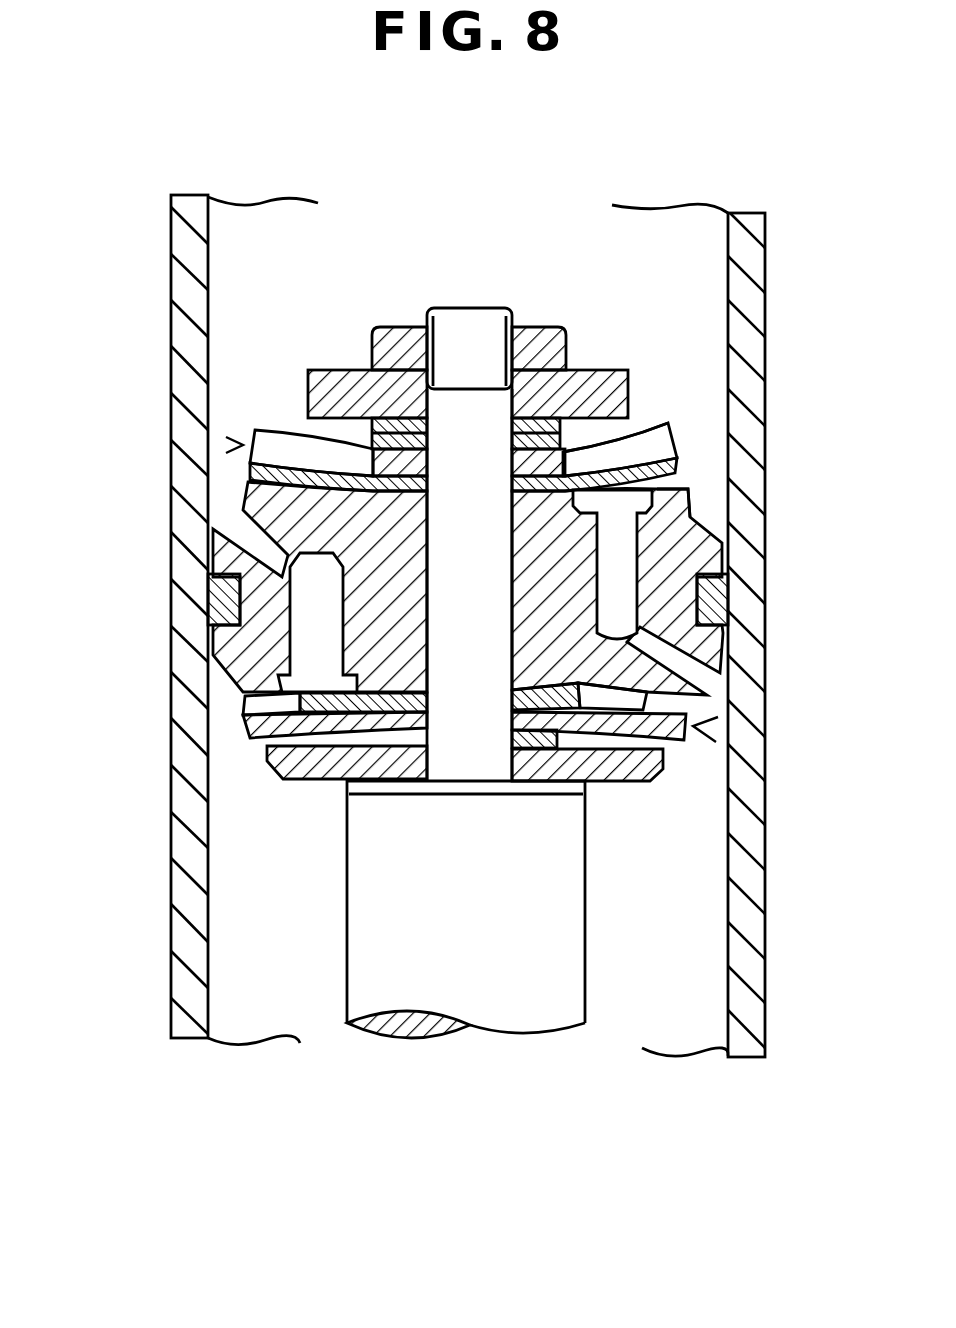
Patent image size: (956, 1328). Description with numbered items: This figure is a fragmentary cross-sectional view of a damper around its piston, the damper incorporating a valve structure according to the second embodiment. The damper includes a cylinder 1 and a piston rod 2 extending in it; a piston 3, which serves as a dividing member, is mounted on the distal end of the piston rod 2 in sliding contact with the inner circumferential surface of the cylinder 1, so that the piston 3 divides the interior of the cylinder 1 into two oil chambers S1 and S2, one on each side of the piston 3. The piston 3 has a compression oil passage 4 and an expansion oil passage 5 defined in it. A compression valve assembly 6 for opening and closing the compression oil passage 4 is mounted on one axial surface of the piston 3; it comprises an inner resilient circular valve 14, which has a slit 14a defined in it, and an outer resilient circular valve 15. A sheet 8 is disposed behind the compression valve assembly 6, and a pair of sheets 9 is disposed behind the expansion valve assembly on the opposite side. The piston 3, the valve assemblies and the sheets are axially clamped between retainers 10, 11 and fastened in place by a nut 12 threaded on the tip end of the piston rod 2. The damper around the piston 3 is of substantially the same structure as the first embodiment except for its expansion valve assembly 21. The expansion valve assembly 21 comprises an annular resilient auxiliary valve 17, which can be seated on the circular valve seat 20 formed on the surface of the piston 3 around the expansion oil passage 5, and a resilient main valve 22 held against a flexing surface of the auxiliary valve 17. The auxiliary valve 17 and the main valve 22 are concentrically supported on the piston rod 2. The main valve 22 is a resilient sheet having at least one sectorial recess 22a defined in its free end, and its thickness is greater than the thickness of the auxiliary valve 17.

The cylinder 1 is at (175, 275).
The piston rod 2 is at (546, 1030).
The piston 3 is at (228, 548).
The compression oil passage 4 is at (317, 638).
The expansion oil passage 5 is at (612, 570).
The compression valve assembly 6 is at (693, 726).
The sheet 8 is at (553, 735).
The sheets 9 is at (372, 435).
The retainer 10 is at (653, 770).
The retainer 11 is at (333, 380).
The nut 12 is at (402, 345).
The inner resilient circular valve 14 is at (253, 727).
The slit 14a is at (270, 703).
The outer resilient circular valve 15 is at (250, 740).
The auxiliary valve 17 is at (682, 462).
The valve seat 20 is at (688, 484).
The expansion valve assembly 21 is at (243, 445).
The main valve 22 is at (682, 442).
The sectorial recess 22a is at (638, 447).
The oil chamber S1 is at (267, 1000).
The oil chamber S2 is at (283, 232).